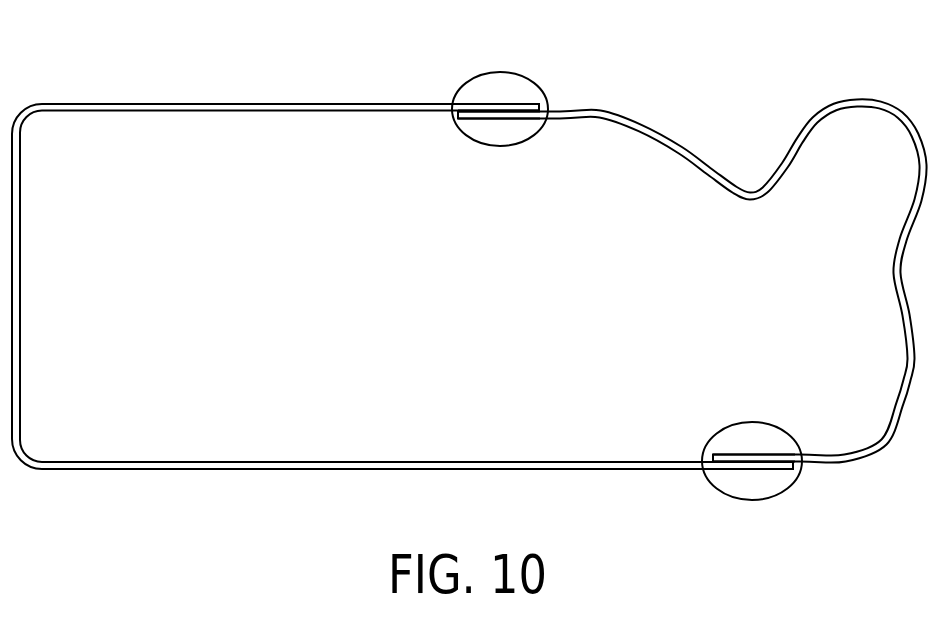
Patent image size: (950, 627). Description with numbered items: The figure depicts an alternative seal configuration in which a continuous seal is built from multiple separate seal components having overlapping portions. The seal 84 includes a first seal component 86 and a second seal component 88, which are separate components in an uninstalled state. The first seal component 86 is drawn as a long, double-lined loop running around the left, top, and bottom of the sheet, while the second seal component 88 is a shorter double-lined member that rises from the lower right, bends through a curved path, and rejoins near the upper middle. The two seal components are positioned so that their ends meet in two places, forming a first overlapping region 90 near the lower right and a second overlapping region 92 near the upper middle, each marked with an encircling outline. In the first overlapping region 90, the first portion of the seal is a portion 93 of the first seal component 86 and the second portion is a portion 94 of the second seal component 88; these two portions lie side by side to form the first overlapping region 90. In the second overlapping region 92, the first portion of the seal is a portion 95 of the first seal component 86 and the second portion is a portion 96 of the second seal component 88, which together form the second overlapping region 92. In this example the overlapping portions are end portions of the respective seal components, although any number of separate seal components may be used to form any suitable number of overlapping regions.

The seal 84 is at (203, 497).
The first seal component 86 is at (172, 104).
The second seal component 88 is at (881, 451).
The first overlapping region 90 is at (728, 424).
The second overlapping region 92 is at (530, 72).
The portion of the first seal component 93 is at (752, 469).
The portion of the second seal component 94 is at (748, 454).
The portion of the first seal component 95 is at (500, 103).
The portion of the second seal component 96 is at (502, 119).